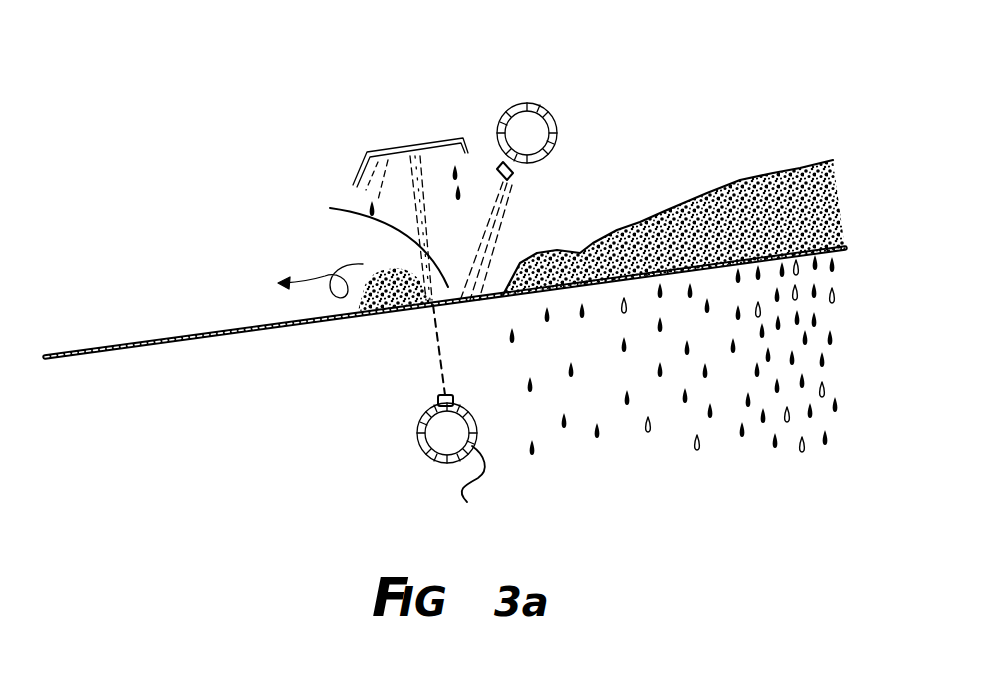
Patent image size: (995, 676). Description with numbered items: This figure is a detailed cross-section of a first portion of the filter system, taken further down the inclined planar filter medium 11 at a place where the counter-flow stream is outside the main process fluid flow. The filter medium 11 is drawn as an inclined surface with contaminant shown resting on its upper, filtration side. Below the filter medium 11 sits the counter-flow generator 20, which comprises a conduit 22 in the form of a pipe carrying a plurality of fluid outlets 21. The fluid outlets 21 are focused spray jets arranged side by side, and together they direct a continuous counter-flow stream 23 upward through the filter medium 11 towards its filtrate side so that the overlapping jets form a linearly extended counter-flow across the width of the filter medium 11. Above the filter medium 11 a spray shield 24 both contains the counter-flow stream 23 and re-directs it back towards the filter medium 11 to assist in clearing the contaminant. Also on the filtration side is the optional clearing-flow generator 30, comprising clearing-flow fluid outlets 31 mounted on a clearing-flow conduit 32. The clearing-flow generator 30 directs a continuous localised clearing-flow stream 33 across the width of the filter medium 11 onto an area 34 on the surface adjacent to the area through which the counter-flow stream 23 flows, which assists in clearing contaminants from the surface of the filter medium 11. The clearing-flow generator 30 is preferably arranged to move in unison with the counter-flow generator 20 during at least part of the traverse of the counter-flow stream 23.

The planar filter medium 11 is at (140, 346).
The counter-flow generator 20 is at (420, 454).
The fluid outlets 21 is at (437, 400).
The conduit 22 is at (486, 481).
The counter-flow stream 23 is at (422, 330).
The spray shield 24 is at (437, 140).
The clearing-flow generator 30 is at (582, 92).
The clearing-flow fluid outlets 31 is at (500, 163).
The clearing-flow conduit 32 is at (545, 104).
The clearing-flow stream 33 is at (500, 223).
The area 34 is at (363, 246).